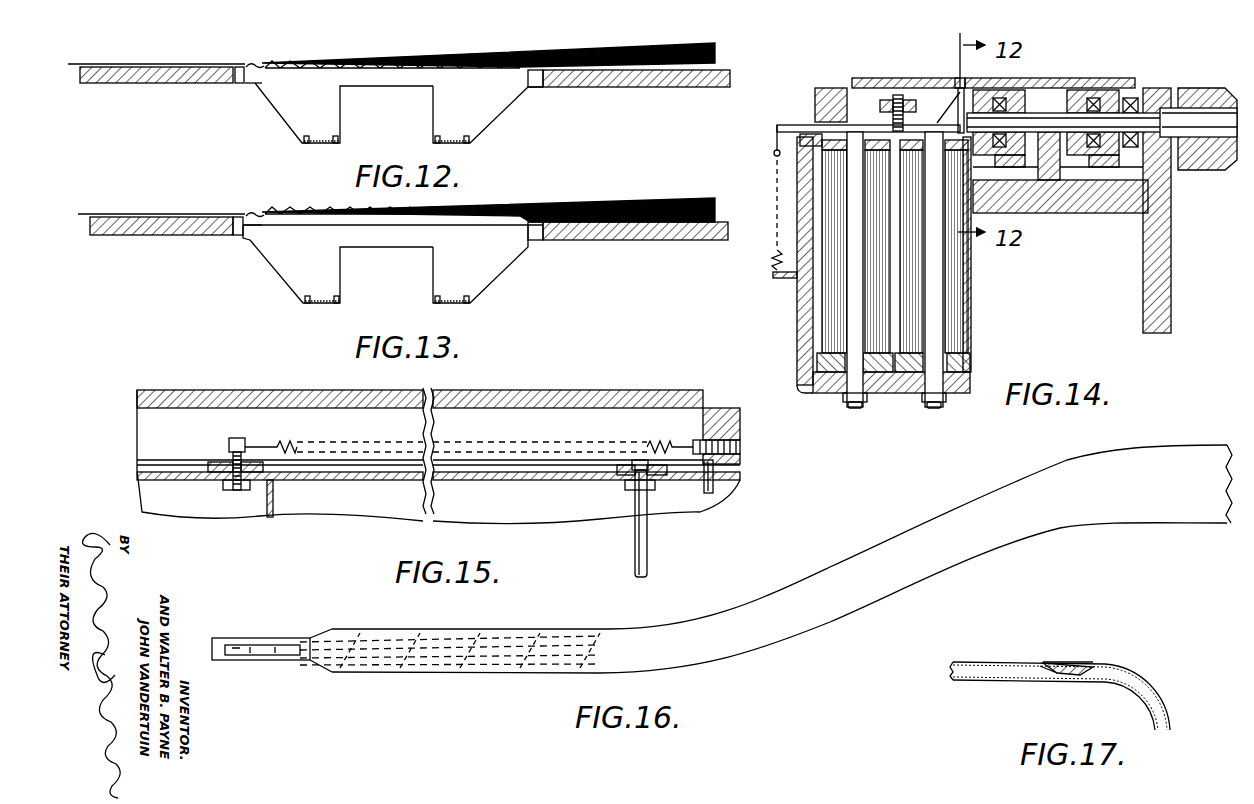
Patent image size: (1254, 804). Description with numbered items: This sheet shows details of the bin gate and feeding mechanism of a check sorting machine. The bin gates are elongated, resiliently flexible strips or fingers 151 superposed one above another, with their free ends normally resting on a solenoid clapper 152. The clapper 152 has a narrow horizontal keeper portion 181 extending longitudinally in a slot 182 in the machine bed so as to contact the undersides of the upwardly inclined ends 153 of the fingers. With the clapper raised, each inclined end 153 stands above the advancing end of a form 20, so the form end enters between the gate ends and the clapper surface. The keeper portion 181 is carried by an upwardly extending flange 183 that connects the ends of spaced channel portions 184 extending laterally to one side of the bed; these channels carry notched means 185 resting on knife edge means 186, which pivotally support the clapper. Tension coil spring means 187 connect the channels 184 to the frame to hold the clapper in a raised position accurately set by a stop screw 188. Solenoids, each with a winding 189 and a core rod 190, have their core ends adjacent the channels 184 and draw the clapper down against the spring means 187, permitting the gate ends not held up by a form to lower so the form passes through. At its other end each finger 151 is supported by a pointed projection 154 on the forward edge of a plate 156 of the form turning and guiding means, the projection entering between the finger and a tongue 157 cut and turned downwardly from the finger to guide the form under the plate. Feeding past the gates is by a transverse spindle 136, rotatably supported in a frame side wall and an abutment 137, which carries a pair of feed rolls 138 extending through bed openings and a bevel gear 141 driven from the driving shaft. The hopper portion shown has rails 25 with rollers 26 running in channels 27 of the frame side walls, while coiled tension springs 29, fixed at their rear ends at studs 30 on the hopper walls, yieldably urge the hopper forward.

In FIG. 12, the form 20 is at (133, 68).
In FIG. 13, the form 20 is at (152, 216).
In FIG. 14, the form 20 is at (857, 78).
In FIG. 12, the flexible strips or fingers 151 is at (664, 47).
In FIG. 13, the flexible strips or fingers 151 is at (651, 212).
In FIG. 16, the flexible strips or fingers 151 is at (572, 617).
In FIG. 12, the solenoid clapper 152 is at (278, 90).
In FIG. 13, the solenoid clapper 152 is at (256, 251).
In FIG. 16, the solenoid clapper 152 is at (227, 640).
In FIG. 12, the upwardly inclined end 153 is at (252, 64).
In FIG. 13, the upwardly inclined end 153 is at (252, 212).
In FIG. 14, the upwardly inclined end 153 is at (960, 66).
In FIG. 12, the keeper portion 181 is at (262, 82).
In FIG. 13, the keeper portion 181 is at (258, 236).
In FIG. 14, the keeper portion 181 is at (963, 82).
In FIG. 12, the slot 182 is at (238, 70).
In FIG. 13, the slot 182 is at (238, 218).
In FIG. 14, the slot 182 is at (957, 82).
In FIG. 16, the slot 182 is at (225, 660).
In FIG. 12, the flange 183 is at (500, 98).
In FIG. 13, the flange 183 is at (507, 253).
In FIG. 14, the flange 183 is at (950, 106).
In FIG. 12, the channel portions 184 is at (450, 137).
In FIG. 13, the channel portions 184 is at (318, 298).
In FIG. 14, the channel portions 184 is at (778, 126).
In FIG. 14, the notched means 185 is at (820, 142).
In FIG. 14, the knife edge means 186 is at (798, 150).
In FIG. 14, the tension coil spring means 187 is at (774, 215).
In FIG. 14, the stop screw 188 is at (898, 96).
In FIG. 14, the winding 189 is at (833, 316).
In FIG. 14, the core rod 190 is at (853, 333).
In FIG. 14, the transverse spindle 136 is at (1123, 120).
In FIG. 14, the abutment 137 is at (1046, 176).
In FIG. 14, the feed rolls 138 is at (1110, 84).
In FIG. 14, the bevel gear 141 is at (1200, 150).
In FIG. 15, the rails 25 is at (322, 476).
In FIG. 15, the rollers 26 is at (263, 467).
In FIG. 15, the channels 27 is at (545, 473).
In FIG. 15, the coiled tension springs 29 is at (539, 443).
In FIG. 15, the studs 30 is at (230, 443).
In FIG. 17, the pointed projection 154 is at (1067, 668).
In FIG. 17, the plate 156 is at (1137, 678).
In FIG. 17, the tongue 157 is at (1052, 671).